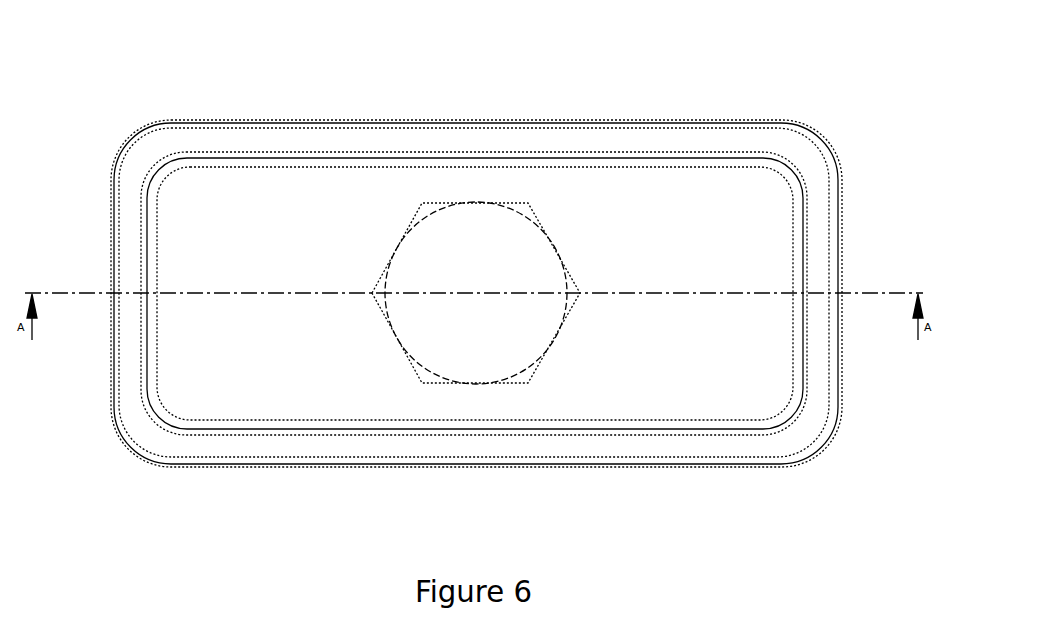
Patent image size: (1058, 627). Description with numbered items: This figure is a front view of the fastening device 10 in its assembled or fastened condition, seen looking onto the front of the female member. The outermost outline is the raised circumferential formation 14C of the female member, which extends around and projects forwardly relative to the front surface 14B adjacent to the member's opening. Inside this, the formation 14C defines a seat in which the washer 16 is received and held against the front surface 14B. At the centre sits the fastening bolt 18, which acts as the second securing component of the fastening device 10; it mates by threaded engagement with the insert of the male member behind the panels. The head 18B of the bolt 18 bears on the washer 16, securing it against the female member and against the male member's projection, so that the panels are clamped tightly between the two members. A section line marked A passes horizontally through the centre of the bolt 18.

The fastening device 10 is at (171, 96).
The front surface 14B is at (797, 215).
The raised circumferential formation 14C is at (797, 150).
The washer 16 is at (671, 225).
The fastening bolt 18 is at (490, 225).
The head 18B is at (553, 242).